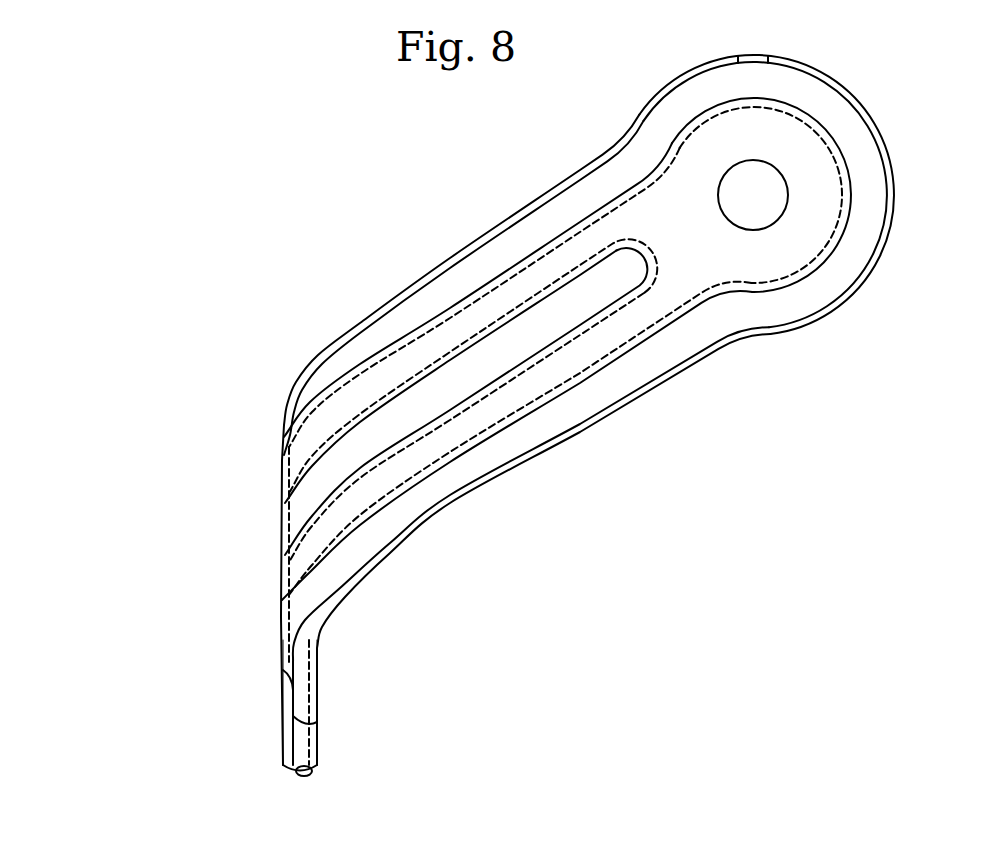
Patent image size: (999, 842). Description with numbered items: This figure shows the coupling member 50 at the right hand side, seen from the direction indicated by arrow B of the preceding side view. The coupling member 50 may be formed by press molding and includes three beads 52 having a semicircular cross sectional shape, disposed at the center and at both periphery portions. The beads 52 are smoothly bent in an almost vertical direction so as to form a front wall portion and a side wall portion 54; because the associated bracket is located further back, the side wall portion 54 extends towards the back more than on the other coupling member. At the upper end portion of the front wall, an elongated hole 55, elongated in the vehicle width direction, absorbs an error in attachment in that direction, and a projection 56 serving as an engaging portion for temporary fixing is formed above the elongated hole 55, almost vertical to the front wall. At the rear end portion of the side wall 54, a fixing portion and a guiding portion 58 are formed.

The coupling member 50 is at (336, 326).
The beads 52 is at (563, 305).
The side wall portion 54 is at (682, 212).
The elongated hole 55 is at (757, 180).
The projection 56 is at (800, 58).
The guiding portion 58 is at (283, 751).